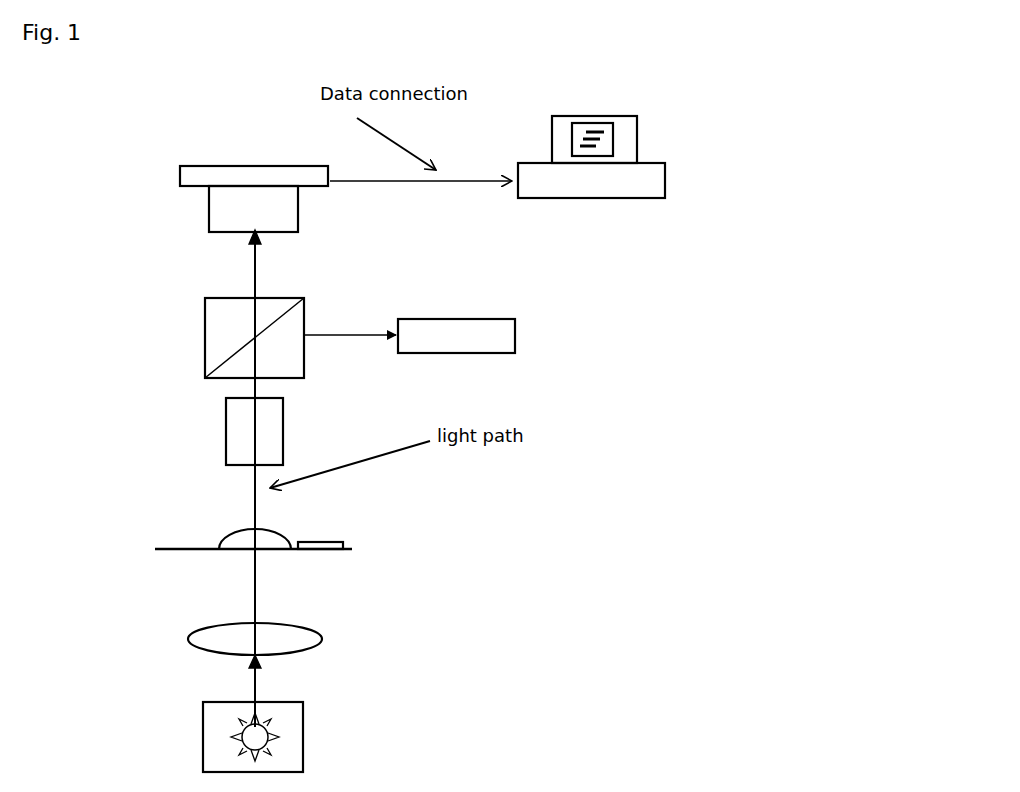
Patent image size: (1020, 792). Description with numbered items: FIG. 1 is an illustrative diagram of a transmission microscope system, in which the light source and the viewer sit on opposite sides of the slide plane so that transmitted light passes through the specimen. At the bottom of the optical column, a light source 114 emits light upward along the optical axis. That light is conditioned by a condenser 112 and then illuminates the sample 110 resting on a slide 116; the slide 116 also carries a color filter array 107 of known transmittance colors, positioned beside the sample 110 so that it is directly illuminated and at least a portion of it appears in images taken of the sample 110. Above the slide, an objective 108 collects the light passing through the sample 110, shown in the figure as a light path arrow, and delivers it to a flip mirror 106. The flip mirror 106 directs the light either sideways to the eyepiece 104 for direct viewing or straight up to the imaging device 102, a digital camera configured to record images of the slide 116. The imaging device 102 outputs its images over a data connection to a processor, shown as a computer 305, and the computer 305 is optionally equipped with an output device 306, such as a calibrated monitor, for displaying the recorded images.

The imaging device 102 is at (203, 206).
The eyepiece 104 is at (440, 313).
The flip mirror 106 is at (192, 335).
The color filter array 107 is at (332, 531).
The objective 108 is at (222, 432).
The sample 110 is at (216, 539).
The condenser 112 is at (179, 633).
The light source 114 is at (200, 738).
The slide 116 is at (194, 566).
The computer 305 is at (632, 219).
The output device 306 is at (644, 138).